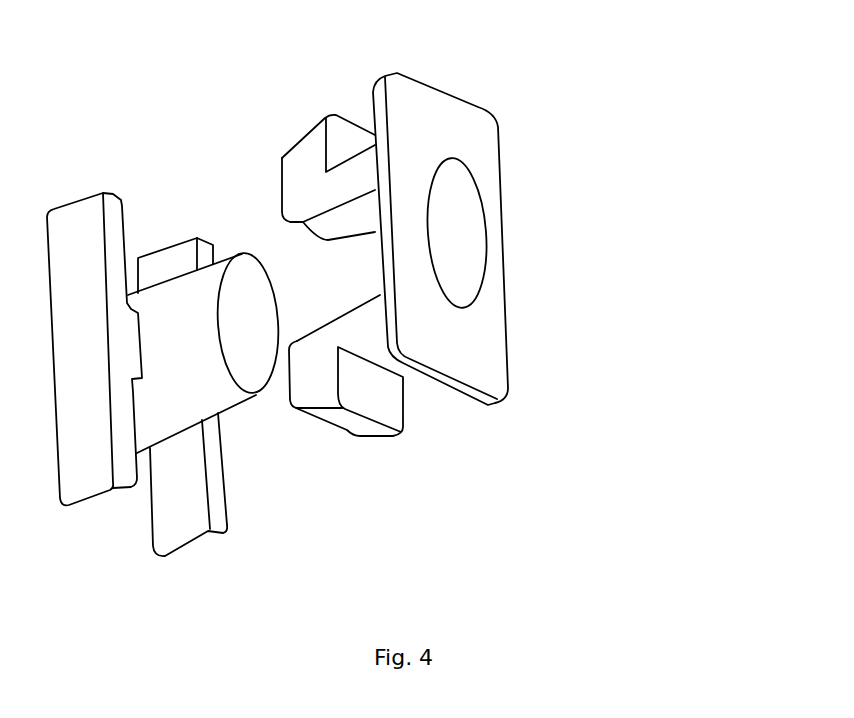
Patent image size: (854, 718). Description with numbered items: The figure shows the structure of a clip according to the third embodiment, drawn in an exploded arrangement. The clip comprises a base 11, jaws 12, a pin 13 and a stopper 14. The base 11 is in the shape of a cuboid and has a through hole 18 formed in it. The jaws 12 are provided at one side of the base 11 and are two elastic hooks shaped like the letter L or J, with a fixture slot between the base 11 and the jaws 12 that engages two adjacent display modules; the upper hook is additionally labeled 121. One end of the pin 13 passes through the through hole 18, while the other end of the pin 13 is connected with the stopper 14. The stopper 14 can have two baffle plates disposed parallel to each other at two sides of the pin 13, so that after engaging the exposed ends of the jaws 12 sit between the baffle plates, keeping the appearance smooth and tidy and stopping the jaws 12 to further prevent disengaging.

The base 11 is at (482, 357).
The jaws 12 is at (375, 428).
The upper clip / hook member 121 is at (355, 118).
The pin 13 is at (182, 327).
The stopper 14 is at (65, 508).
The through hole 18 is at (455, 233).